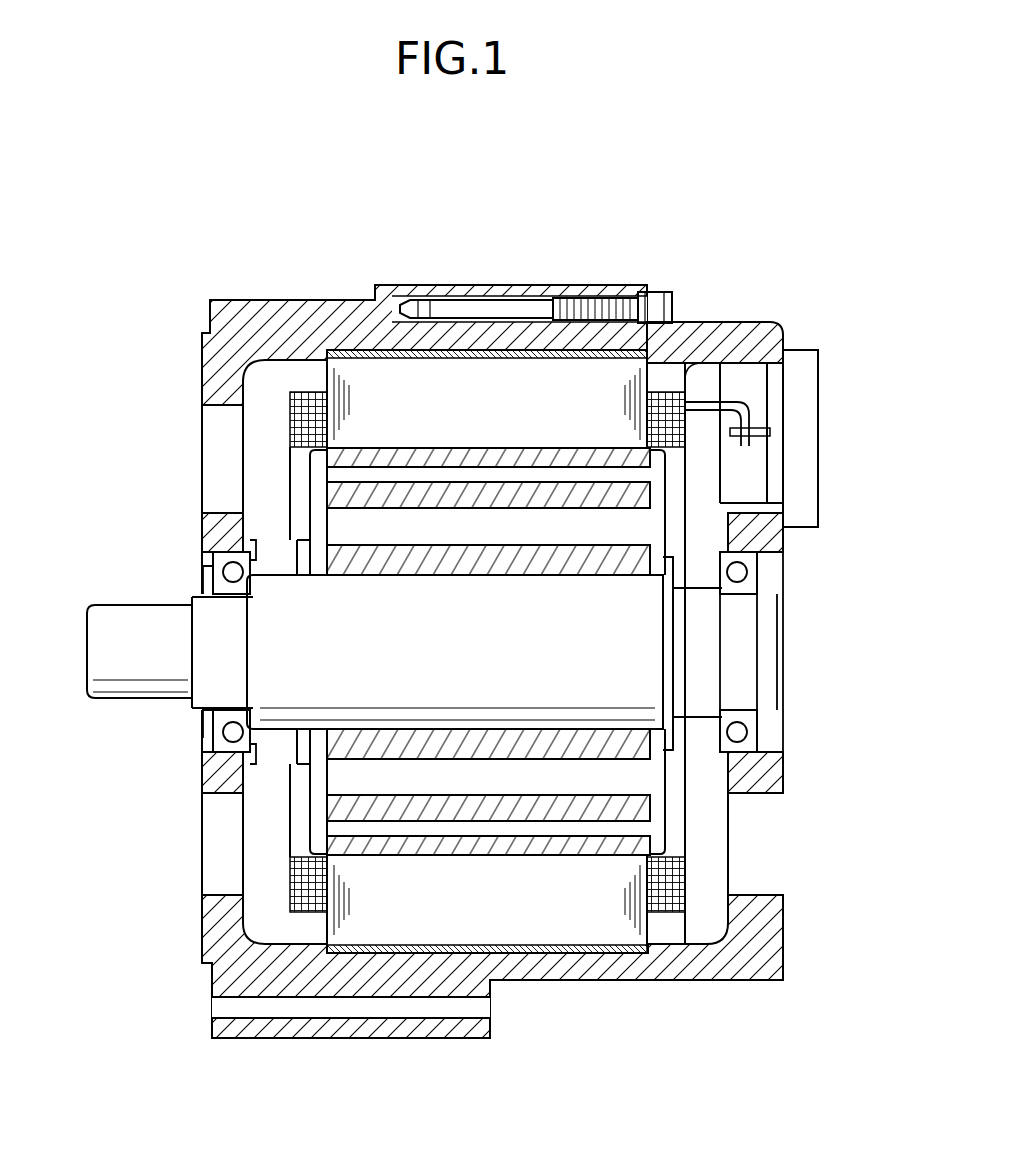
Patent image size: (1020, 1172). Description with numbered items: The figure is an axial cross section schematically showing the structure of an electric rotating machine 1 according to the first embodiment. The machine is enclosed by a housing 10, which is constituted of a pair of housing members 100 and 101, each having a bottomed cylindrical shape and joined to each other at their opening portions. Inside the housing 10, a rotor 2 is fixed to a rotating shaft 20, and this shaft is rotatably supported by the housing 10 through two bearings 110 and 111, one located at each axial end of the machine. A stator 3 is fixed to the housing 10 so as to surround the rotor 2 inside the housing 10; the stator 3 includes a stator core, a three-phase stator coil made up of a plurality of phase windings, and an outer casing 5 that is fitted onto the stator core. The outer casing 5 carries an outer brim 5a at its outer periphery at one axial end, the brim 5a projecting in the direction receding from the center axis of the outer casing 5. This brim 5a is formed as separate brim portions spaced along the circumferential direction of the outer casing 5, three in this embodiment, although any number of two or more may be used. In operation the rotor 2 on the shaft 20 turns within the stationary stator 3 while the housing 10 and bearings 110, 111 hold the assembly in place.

The electric rotating machine 1 is at (793, 270).
The rotor 2 is at (650, 495).
The stator 3 is at (622, 390).
The outer casing 5 is at (342, 350).
The outer brim 5a is at (628, 318).
The housing 10 is at (590, 212).
The housing member 100 is at (378, 305).
The housing member 101 is at (508, 296).
The rotating shaft 20 is at (142, 670).
The bearing 110 is at (228, 552).
The bearing 111 is at (757, 560).